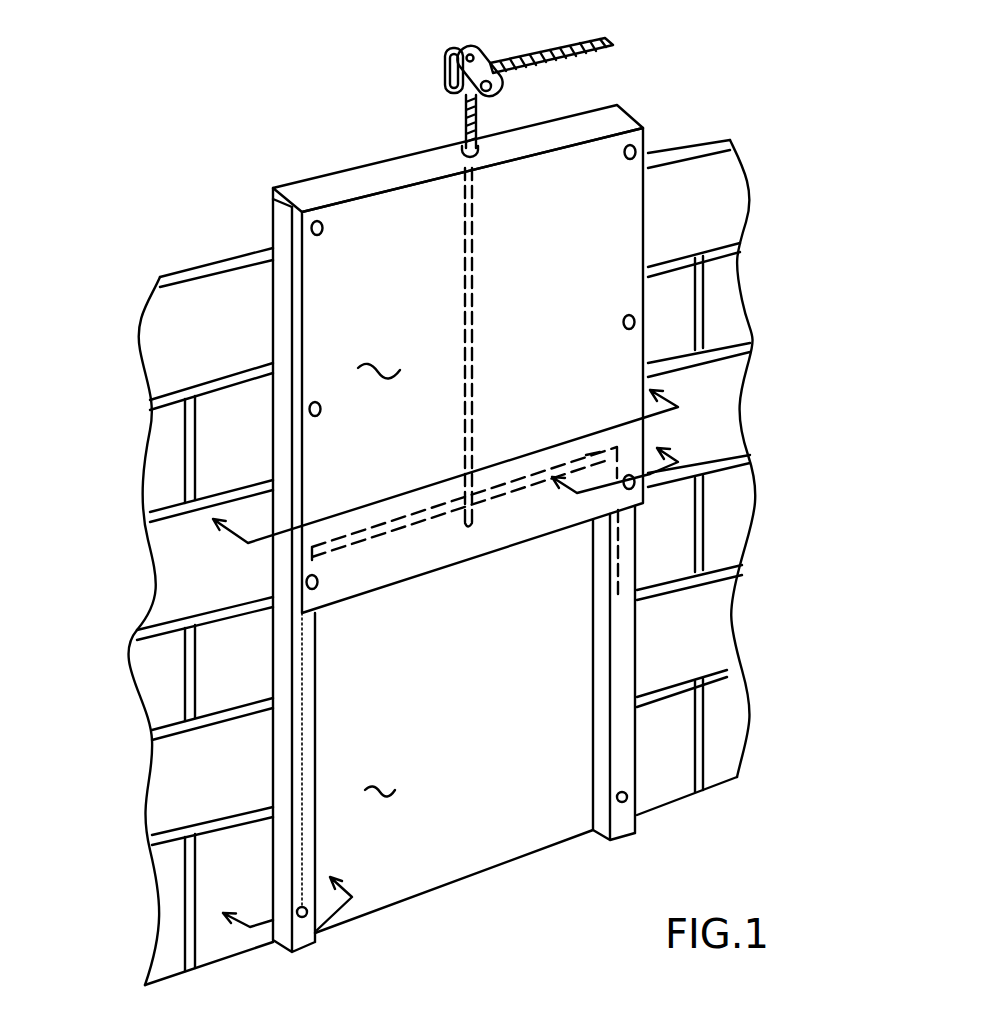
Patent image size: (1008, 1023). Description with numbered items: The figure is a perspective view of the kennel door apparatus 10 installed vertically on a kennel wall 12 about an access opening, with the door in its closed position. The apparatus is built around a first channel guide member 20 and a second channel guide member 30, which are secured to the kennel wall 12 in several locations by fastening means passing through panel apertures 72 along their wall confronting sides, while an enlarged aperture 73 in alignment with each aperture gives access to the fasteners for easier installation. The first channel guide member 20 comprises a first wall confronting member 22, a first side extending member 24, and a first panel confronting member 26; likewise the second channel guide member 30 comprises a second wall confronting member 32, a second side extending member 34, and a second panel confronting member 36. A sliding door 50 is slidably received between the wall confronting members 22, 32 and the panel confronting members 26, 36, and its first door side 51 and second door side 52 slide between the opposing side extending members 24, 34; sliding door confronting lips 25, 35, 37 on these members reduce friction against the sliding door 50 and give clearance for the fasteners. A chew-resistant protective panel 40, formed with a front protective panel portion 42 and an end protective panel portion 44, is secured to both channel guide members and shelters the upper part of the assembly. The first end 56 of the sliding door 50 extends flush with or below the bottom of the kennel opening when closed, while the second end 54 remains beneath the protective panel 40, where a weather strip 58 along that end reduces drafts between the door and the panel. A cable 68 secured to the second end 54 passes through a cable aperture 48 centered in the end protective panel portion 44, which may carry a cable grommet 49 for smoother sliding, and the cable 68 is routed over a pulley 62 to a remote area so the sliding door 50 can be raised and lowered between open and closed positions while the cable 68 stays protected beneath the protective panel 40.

The kennel door apparatus 10 is at (437, 515).
The kennel wall 12 is at (708, 235).
The first channel guide member 20 is at (303, 675).
The first wall confronting member 22 is at (368, 1004).
The first side extending member 24 is at (277, 793).
The sliding door confronting lip 25 is at (435, 1011).
The first panel confronting member 26 is at (305, 757).
The second channel guide member 30 is at (717, 745).
The second wall confronting member 32 is at (805, 1003).
The second side extending member 34 is at (620, 690).
The sliding door confronting lip 35 is at (745, 1014).
The second panel confronting member 36 is at (627, 562).
The sliding door confronting lip 37 is at (585, 628).
The protective panel 40 is at (405, 329).
The front protective panel portion 42 is at (382, 347).
The end protective panel portion 44 is at (293, 186).
The cable aperture 48 is at (611, 85).
The cable grommet 49 is at (551, 55).
The sliding door 50 is at (324, 873).
The first door side 51 is at (340, 820).
The second door side 52 is at (587, 723).
The second end of sliding door 54 is at (513, 478).
The first end of sliding door 56 is at (463, 882).
The weather strip 58 is at (590, 460).
The pulley 62 is at (448, 80).
The cable 68 is at (460, 133).
The panel aperture 72 is at (311, 229).
The enlarged aperture 73 is at (305, 917).